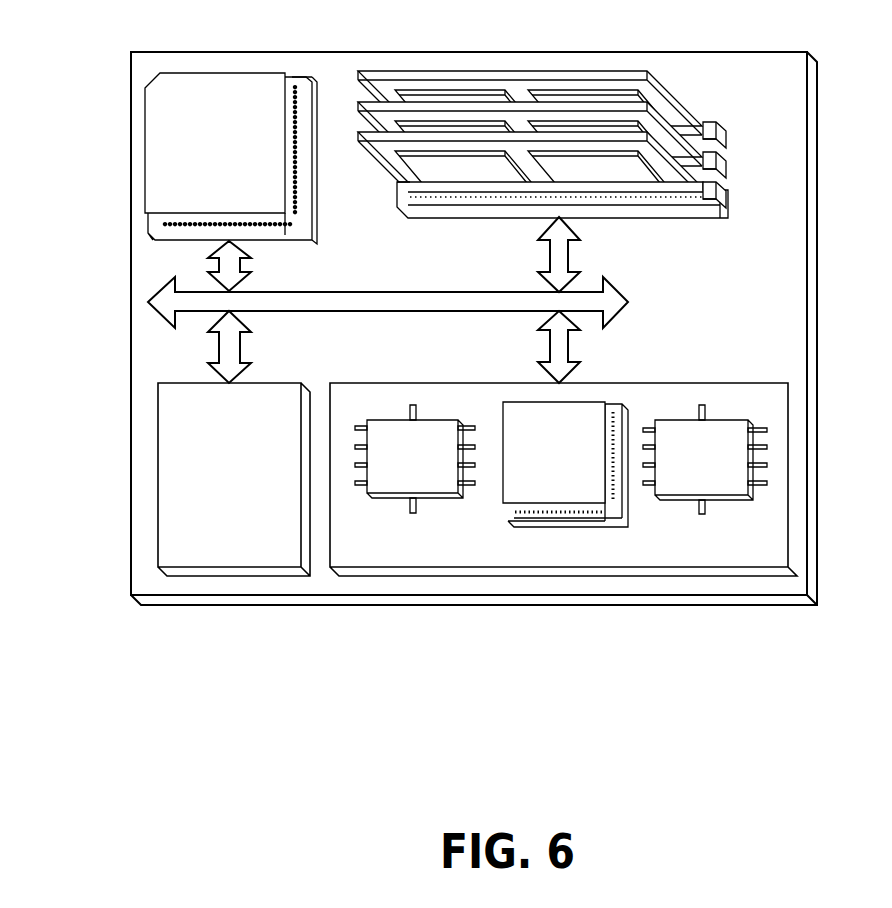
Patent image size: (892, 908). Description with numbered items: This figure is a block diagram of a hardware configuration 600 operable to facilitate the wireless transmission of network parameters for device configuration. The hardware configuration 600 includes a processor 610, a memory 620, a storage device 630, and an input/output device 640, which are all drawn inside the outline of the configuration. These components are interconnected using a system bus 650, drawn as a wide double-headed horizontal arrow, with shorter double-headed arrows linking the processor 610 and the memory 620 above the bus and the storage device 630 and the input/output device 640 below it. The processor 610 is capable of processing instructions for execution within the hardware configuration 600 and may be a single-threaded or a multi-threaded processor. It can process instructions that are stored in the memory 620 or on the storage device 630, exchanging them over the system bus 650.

The hardware configuration 600 is at (110, 714).
The processor 610 is at (276, 206).
The memory 620 is at (698, 109).
The storage device 630 is at (289, 561).
The input/output device 640 is at (748, 383).
The system bus 650 is at (393, 311).